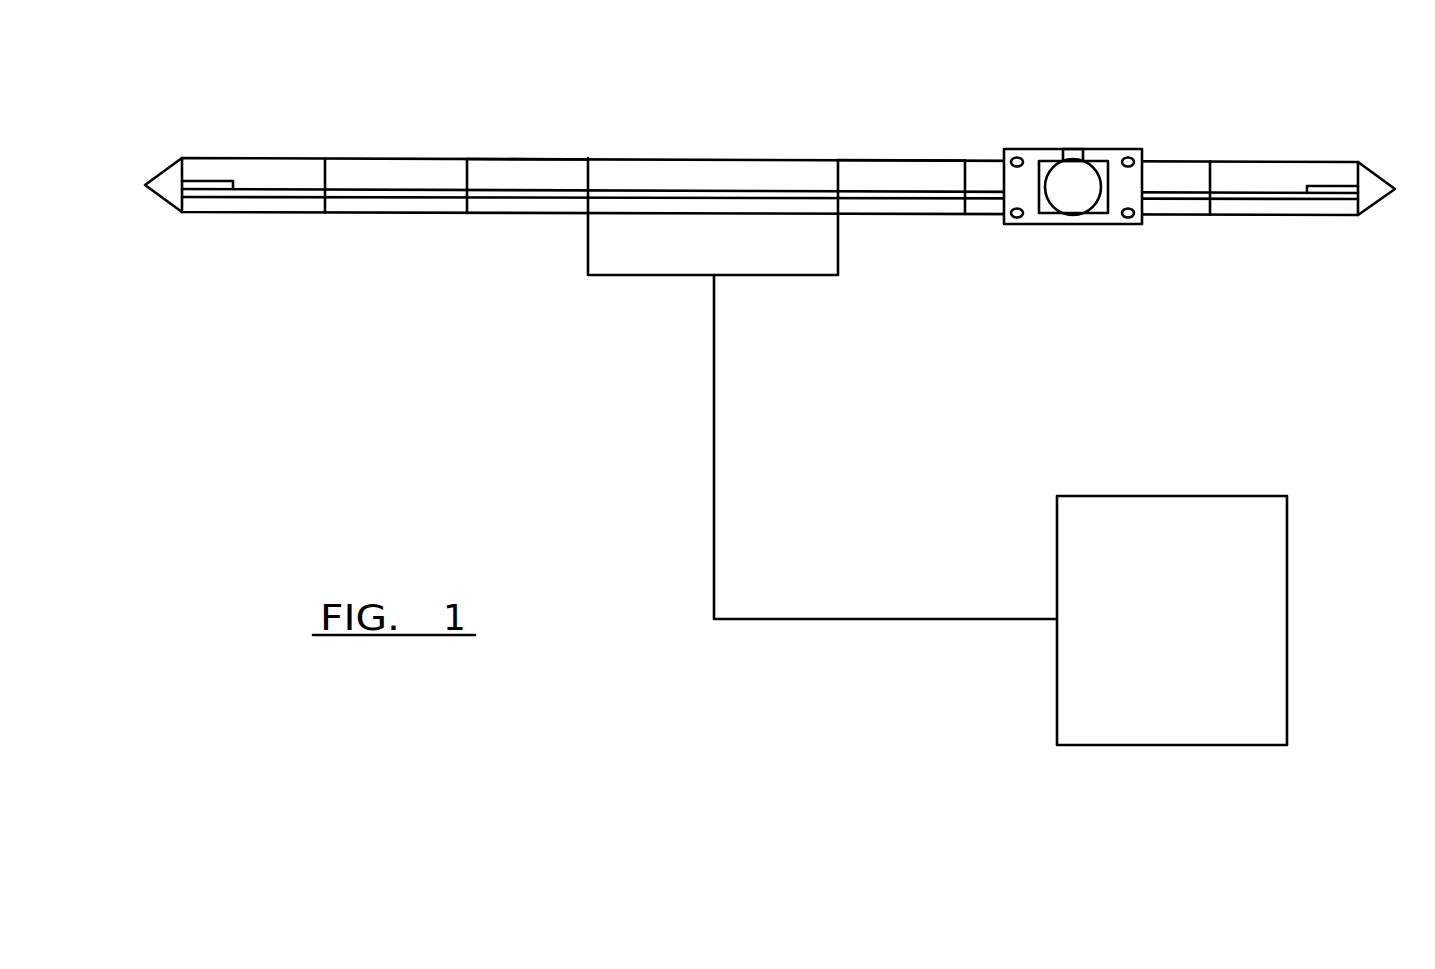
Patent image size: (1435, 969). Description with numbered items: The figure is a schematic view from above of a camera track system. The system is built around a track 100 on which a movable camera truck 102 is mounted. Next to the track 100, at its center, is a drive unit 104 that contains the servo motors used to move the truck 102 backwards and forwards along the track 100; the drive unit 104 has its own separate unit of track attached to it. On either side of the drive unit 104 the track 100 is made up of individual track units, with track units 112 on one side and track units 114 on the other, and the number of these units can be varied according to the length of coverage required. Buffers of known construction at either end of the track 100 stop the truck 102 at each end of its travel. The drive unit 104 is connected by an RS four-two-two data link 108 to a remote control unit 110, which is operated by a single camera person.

The track 100 is at (708, 147).
The camera truck 102 is at (1053, 218).
The drive unit 104 is at (630, 242).
The RS 422 data link 108 is at (772, 619).
The remote control unit 110 is at (1242, 595).
The track units 112 is at (540, 175).
The track units 114 is at (898, 178).